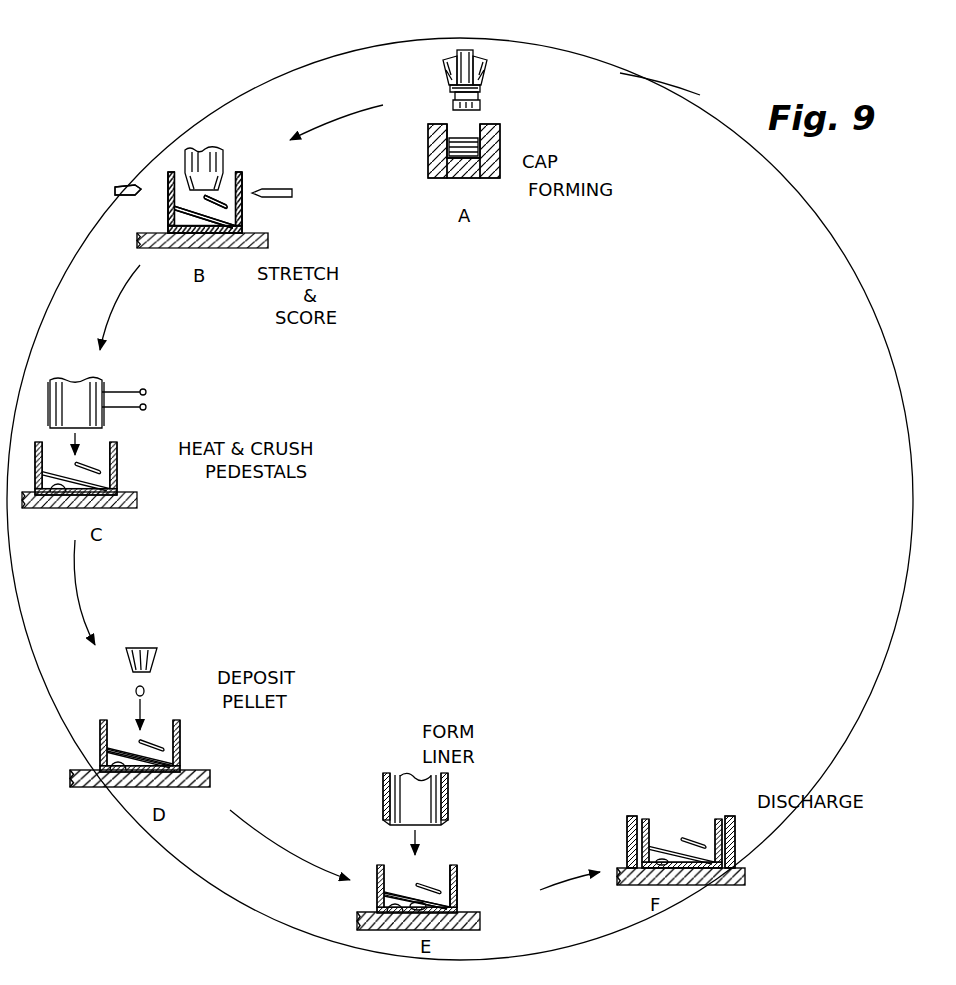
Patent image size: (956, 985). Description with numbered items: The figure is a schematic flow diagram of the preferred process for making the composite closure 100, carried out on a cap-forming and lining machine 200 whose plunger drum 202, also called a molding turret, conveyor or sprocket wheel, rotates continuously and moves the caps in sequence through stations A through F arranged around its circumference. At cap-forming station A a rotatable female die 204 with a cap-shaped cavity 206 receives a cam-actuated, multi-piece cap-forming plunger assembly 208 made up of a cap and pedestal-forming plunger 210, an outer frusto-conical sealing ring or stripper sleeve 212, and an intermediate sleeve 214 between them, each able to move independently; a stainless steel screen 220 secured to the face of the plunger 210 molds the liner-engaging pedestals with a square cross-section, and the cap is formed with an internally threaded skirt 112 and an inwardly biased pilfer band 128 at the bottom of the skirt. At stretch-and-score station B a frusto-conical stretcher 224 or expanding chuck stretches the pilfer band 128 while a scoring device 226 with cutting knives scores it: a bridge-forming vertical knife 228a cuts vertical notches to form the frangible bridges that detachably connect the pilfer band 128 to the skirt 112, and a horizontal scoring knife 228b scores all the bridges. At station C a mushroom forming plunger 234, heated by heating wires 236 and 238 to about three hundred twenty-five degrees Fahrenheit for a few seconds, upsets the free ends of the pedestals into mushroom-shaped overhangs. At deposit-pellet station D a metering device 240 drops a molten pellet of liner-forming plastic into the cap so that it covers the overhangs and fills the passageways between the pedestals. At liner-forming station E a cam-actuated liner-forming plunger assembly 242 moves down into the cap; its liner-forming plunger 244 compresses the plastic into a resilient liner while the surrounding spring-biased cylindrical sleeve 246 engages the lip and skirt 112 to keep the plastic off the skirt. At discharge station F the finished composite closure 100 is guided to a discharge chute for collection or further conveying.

The composite closure 100 is at (688, 816).
The internally threaded skirt 112 is at (456, 887).
The pilfer band 128 is at (243, 190).
The cap-forming and lining machine 200 is at (670, 77).
The plunger drum 202 is at (292, 78).
The rotatable female die 204 is at (465, 167).
The cap-shaped cavity 206 is at (462, 158).
The cap-forming plunger assembly 208 is at (475, 62).
The cap and pedestal-forming plunger 210 is at (450, 91).
The outer frusto-conical sealing ring 212 is at (485, 70).
The intermediate sleeve 214 is at (478, 56).
The stainless steel screen 220 is at (474, 108).
The frusto-conical stretcher 224 is at (176, 148).
The scoring device 226 is at (128, 183).
The bridge-forming vertical knife 228a is at (128, 203).
The horizontal scoring knife 228b is at (280, 193).
The mushroom forming plunger 234 is at (55, 405).
The heating wire 236 is at (125, 385).
The heating wire 238 is at (126, 415).
The metering device 240 is at (155, 655).
The liner-forming plunger assembly 242 is at (424, 797).
The liner-forming plunger 244 is at (415, 782).
The cylindrical sleeve 246 is at (450, 805).